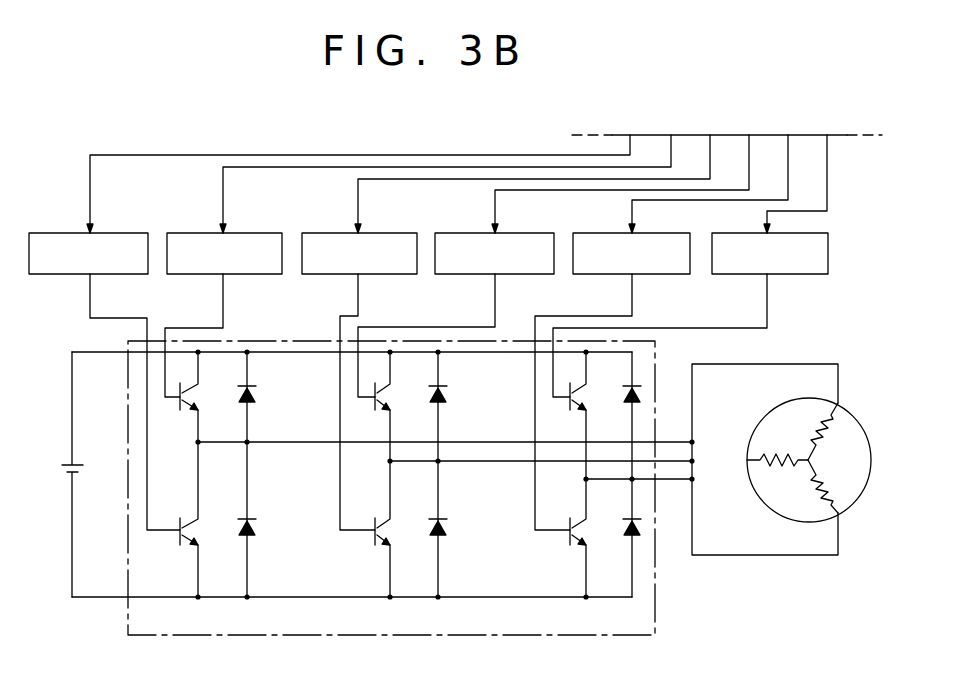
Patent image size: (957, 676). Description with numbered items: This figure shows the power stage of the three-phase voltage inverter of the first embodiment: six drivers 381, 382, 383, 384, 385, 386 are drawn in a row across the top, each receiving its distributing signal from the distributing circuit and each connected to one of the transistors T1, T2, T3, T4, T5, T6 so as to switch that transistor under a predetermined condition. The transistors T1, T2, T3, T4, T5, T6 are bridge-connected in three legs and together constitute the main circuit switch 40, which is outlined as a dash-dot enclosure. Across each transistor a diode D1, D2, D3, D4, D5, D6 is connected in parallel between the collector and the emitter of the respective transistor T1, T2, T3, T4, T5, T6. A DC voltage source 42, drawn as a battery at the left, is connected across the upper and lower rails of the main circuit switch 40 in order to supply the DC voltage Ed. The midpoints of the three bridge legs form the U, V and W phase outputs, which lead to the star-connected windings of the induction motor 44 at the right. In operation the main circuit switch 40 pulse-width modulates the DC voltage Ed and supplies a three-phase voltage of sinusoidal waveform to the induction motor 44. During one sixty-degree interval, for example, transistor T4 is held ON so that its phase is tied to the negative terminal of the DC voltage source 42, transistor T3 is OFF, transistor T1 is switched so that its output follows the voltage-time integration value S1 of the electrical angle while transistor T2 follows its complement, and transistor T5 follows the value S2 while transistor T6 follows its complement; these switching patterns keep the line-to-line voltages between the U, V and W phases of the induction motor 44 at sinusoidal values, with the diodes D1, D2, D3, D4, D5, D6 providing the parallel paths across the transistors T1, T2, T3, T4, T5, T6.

The driver 381 is at (257, 240).
The driver 382 is at (118, 240).
The driver 383 is at (525, 240).
The driver 384 is at (385, 240).
The driver 385 is at (808, 267).
The driver 386 is at (675, 267).
The main circuit switch 40 is at (383, 508).
The DC voltage source 42 is at (78, 460).
The induction motor 44 is at (878, 455).
The transistor T1 is at (193, 389).
The transistor T2 is at (193, 533).
The transistor T3 is at (386, 389).
The transistor T4 is at (386, 533).
The transistor T5 is at (582, 389).
The transistor T6 is at (582, 533).
The diode D1 is at (255, 392).
The diode D2 is at (257, 533).
The diode D3 is at (447, 392).
The diode D4 is at (447, 533).
The diode D5 is at (645, 392).
The diode D6 is at (645, 533).